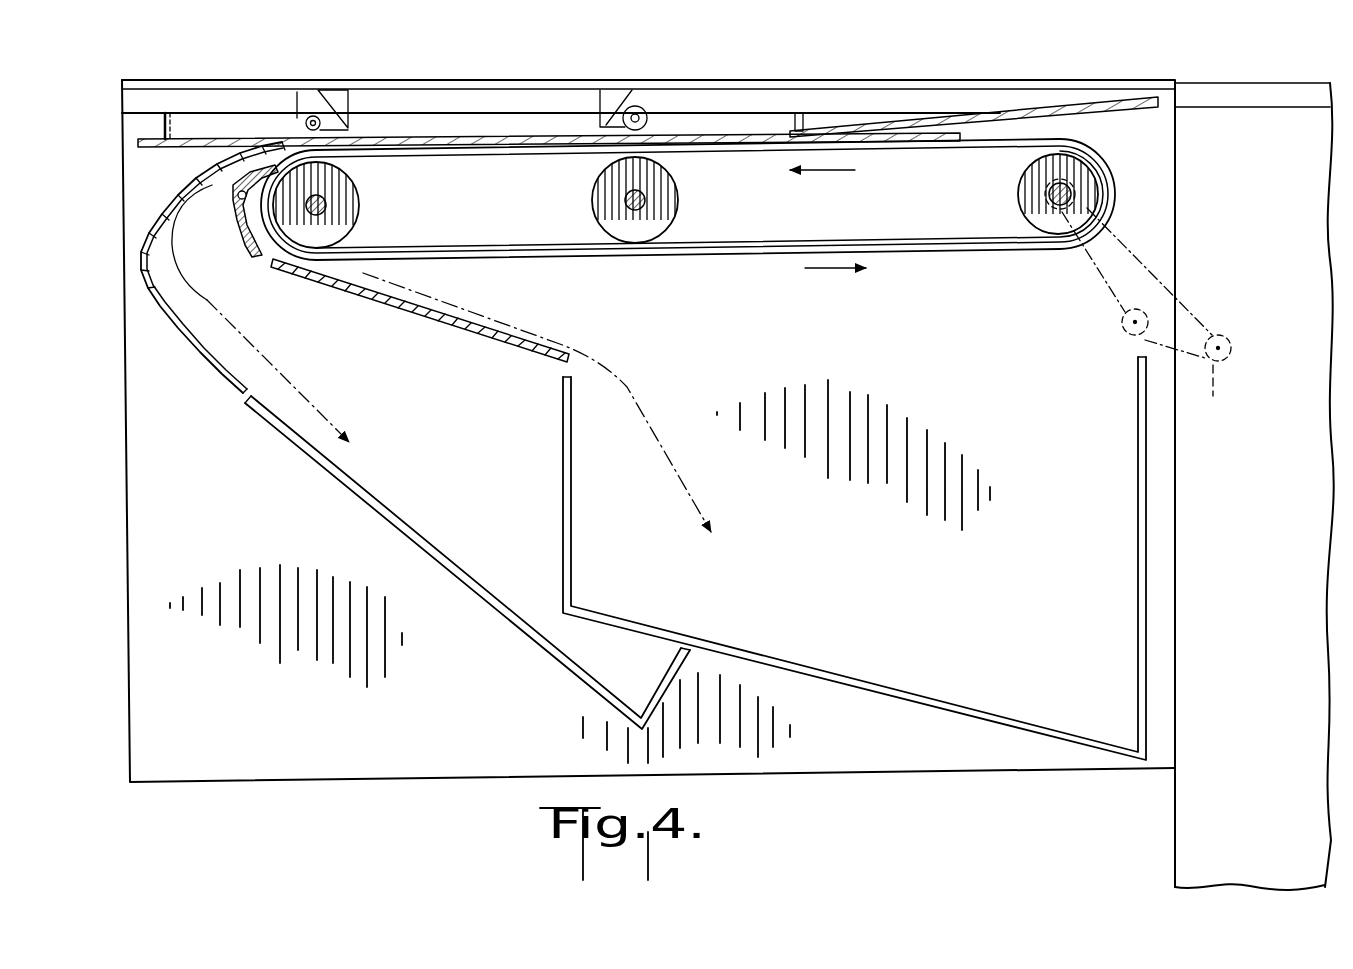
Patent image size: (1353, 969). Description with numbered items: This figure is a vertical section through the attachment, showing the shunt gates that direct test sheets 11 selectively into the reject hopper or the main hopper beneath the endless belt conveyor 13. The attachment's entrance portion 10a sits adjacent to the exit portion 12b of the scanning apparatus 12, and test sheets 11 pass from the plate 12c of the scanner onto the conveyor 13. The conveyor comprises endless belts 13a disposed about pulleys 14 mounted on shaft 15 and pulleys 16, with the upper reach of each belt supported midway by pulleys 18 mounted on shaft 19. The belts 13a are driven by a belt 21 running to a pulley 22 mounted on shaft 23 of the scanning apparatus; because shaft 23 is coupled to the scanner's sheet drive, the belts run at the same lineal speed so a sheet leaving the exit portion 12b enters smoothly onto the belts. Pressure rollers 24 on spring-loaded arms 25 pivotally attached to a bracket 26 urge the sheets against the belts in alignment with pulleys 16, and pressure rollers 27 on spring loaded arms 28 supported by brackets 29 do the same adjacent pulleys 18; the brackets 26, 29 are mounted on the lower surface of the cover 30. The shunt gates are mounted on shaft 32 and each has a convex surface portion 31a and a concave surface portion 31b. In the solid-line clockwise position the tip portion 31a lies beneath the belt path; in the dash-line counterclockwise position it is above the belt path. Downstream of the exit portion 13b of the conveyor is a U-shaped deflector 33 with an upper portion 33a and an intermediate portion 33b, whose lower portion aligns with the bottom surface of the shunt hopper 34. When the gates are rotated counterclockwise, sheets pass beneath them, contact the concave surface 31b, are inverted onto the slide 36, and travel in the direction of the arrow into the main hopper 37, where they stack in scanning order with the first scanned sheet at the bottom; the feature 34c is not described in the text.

The entrance portion 10a is at (1132, 78).
The test sheets 11 is at (1022, 112).
The scanning apparatus 12 is at (1268, 550).
The exit portion 12b is at (1236, 55).
The plate 12c is at (1276, 107).
The endless belt conveyor 13 is at (688, 224).
The endless belts 13a is at (455, 150).
The exit portion 13b is at (280, 157).
The pulleys 14 is at (1094, 187).
The shaft 15 is at (322, 210).
The pulleys 16 is at (353, 205).
The pulleys 18 is at (671, 200).
The shaft 19 is at (645, 203).
The belt 21 is at (1196, 297).
The pulley 22 is at (1234, 363).
The shaft 23 is at (1226, 397).
The pressure rollers 24 is at (303, 112).
The spring-loaded arms 25 is at (327, 118).
The bracket 26 is at (362, 68).
The pressure rollers 27 is at (640, 108).
The spring loaded arms 28 is at (620, 125).
The brackets 29 is at (623, 110).
The cover 30 is at (890, 81).
The convex surface portion 31a is at (305, 151).
The concave surface portion 31b is at (247, 226).
The shaft 32 is at (238, 197).
The U-shaped deflector 33 is at (177, 283).
The upper portion 33a is at (197, 175).
The intermediate portion 33b is at (137, 253).
The shunt hopper 34 is at (526, 655).
The sheet path 34c is at (290, 453).
The slide 36 is at (443, 330).
The main hopper 37 is at (858, 698).